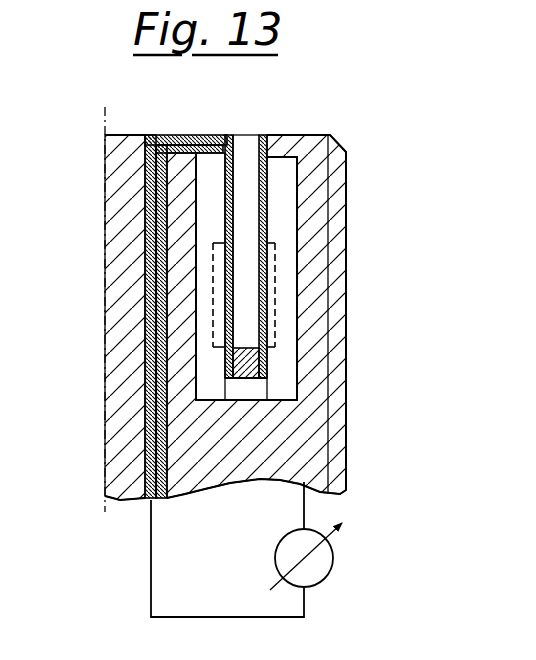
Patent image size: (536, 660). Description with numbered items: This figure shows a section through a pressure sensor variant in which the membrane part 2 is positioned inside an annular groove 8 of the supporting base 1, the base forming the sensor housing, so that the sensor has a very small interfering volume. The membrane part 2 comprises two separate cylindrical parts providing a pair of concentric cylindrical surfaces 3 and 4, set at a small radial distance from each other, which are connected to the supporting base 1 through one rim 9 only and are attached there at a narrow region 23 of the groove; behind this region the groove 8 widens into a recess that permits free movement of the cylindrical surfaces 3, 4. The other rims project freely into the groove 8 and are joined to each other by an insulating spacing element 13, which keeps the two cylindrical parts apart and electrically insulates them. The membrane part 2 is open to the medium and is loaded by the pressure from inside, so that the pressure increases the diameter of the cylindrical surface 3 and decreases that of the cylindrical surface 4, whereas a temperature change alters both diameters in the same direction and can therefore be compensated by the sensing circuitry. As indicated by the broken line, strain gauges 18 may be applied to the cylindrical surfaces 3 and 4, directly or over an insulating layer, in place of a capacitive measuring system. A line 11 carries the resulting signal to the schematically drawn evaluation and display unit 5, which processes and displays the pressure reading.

The supporting base 1 is at (120, 368).
The membrane part 2 is at (258, 135).
The cylindrical surface 3 is at (267, 202).
The cylindrical surface 4 is at (225, 193).
The evaluation and display unit 5 is at (323, 560).
The annular groove 8 is at (300, 262).
The rim 9 is at (230, 135).
The line 11 is at (149, 523).
The spacing element 13 is at (267, 365).
The strain gauges 18 is at (217, 291).
The narrow region 23 is at (320, 136).